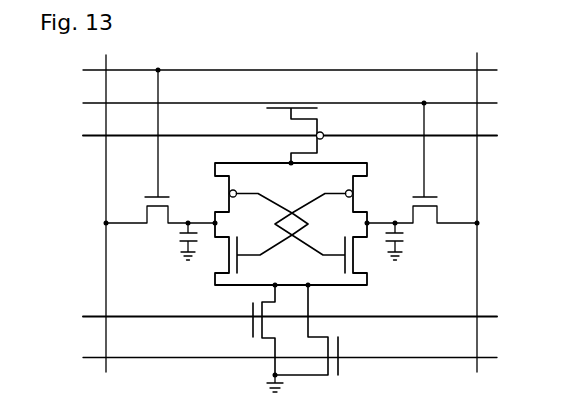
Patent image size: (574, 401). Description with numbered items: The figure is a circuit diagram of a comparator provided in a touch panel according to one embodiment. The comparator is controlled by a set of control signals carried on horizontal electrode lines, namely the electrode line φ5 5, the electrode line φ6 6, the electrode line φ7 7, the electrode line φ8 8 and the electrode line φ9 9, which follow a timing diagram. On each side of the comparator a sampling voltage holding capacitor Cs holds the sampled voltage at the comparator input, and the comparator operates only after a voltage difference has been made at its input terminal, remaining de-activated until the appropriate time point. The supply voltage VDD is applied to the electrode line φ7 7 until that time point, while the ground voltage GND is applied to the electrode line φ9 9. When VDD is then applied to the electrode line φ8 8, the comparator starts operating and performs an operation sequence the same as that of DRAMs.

The control signal φ 5 is at (275, 70).
The control signal φ 6 is at (275, 102).
The electrode line φ 7 is at (275, 134).
The electrode line φ 8 is at (275, 317).
The electrode line φ 9 is at (275, 358).
The sampling voltage holding capacitor Cs is at (290, 241).